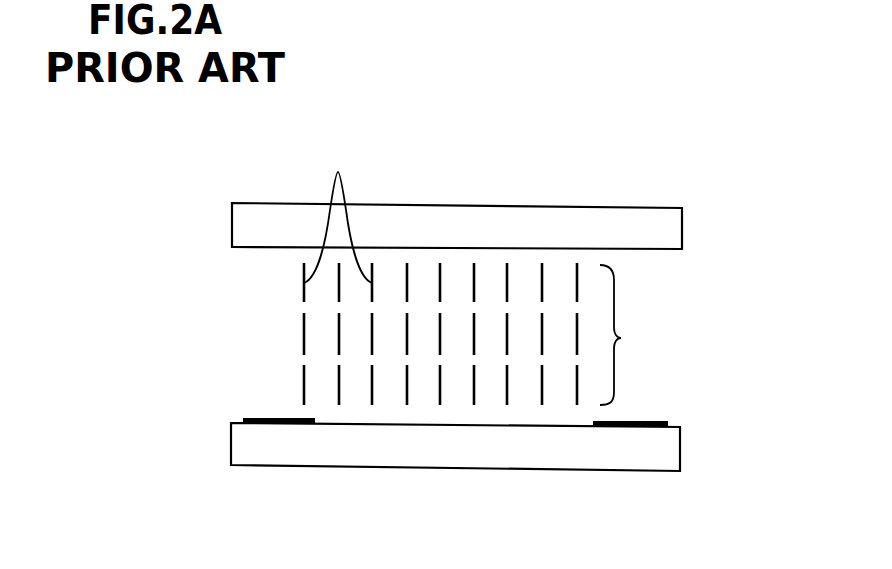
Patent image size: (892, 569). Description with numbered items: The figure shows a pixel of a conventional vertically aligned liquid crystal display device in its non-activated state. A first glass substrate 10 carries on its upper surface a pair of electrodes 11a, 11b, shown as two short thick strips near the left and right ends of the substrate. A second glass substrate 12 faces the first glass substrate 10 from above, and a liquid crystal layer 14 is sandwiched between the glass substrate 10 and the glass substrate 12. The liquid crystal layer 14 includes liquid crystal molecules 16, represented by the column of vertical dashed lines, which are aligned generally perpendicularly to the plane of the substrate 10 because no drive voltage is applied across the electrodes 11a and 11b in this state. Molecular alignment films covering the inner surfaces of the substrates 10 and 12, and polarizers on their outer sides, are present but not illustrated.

The first glass substrate 10 is at (518, 458).
The electrode 11a is at (272, 418).
The electrode 11b is at (633, 423).
The second glass substrate 12 is at (484, 222).
The liquid crystal layer 14 is at (621, 338).
The liquid crystal molecules 16 is at (338, 211).